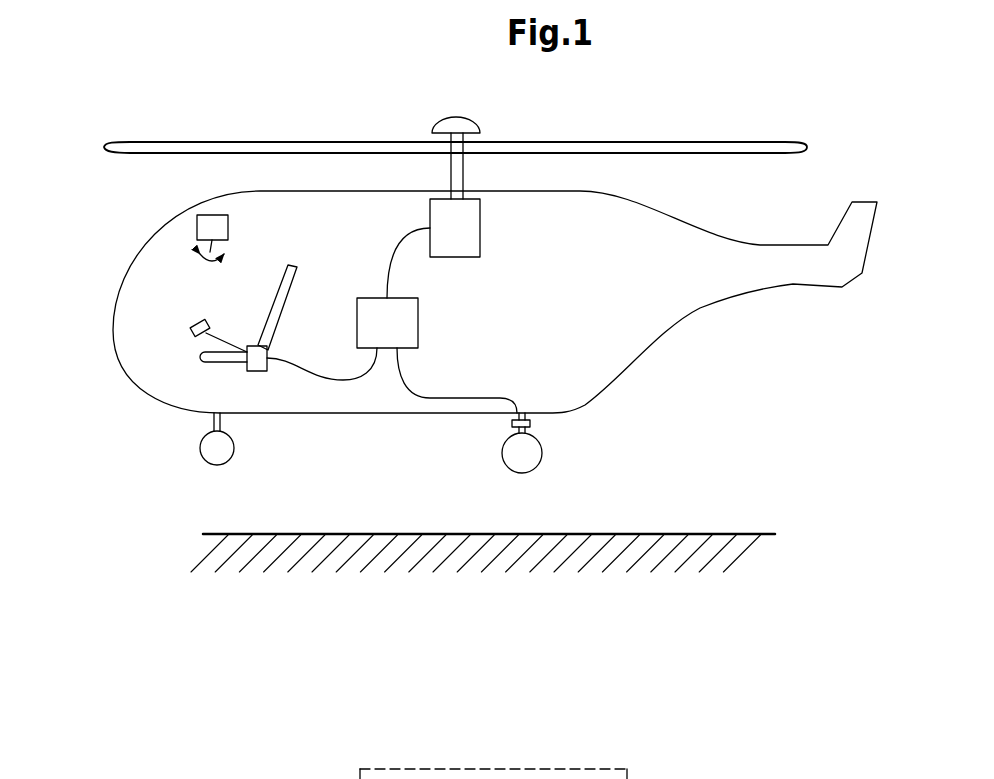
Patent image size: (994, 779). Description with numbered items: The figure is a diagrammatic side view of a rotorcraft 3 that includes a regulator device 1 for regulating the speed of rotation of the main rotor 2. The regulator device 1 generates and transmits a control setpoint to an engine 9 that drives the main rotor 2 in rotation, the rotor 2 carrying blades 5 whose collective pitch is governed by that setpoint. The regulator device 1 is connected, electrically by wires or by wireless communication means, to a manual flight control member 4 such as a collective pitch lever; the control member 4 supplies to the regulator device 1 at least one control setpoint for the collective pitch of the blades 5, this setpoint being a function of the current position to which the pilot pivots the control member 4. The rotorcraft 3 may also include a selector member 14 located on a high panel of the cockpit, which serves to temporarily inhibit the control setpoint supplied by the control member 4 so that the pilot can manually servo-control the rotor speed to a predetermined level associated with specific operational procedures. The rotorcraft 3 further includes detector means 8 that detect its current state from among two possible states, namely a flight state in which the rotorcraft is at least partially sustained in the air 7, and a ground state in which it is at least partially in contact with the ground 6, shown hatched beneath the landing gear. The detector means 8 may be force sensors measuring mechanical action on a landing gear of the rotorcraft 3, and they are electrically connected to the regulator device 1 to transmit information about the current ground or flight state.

The regulator device 1 is at (392, 320).
The main rotor 2 is at (652, 128).
The rotorcraft 3 is at (664, 347).
The manual flight control member 4 is at (194, 316).
The blades 5 is at (338, 143).
The ground 6 is at (748, 534).
The air 7 is at (166, 78).
The detector means 8 is at (539, 426).
The engine 9 is at (455, 228).
The selector member 14 is at (210, 220).